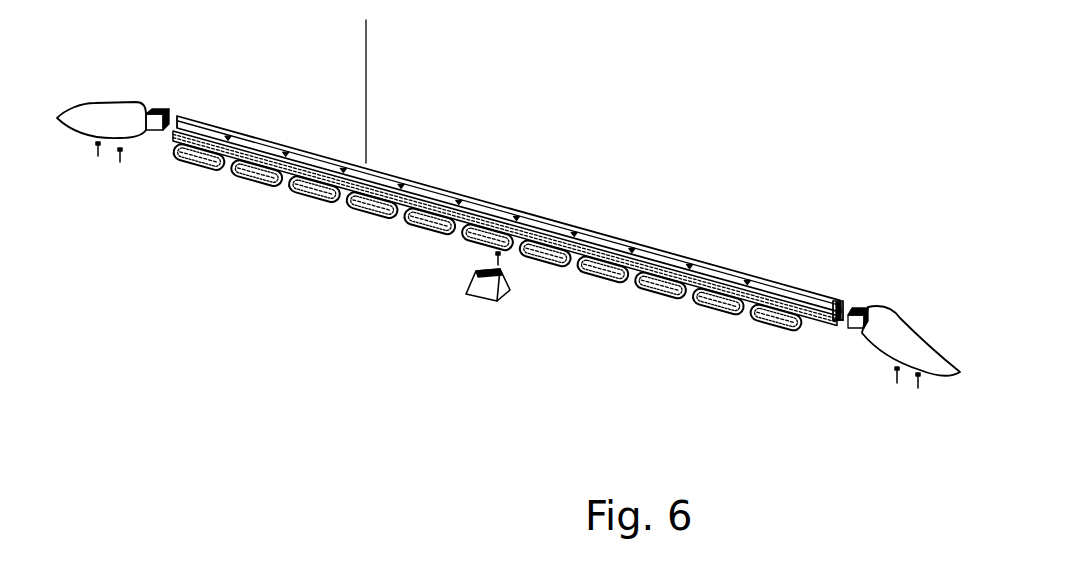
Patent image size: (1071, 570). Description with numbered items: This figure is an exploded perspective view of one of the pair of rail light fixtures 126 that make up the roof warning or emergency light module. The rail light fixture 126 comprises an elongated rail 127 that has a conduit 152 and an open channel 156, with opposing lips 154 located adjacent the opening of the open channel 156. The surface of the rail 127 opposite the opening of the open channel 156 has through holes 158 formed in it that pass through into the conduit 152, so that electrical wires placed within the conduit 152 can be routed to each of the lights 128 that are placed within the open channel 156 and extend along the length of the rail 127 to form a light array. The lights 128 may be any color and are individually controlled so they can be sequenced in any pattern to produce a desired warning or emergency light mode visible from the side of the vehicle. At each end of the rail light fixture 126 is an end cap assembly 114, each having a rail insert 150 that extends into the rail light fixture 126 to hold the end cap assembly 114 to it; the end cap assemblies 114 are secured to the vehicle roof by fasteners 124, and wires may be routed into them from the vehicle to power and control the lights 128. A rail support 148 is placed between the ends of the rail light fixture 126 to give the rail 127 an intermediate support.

The end cap assembly 114 is at (116, 98).
The fasteners 124 is at (122, 160).
The rail light fixture 126 is at (598, 199).
The rail 127 is at (222, 117).
The lights 128 is at (358, 208).
The rail support 148 is at (483, 300).
The rail insert 150 is at (167, 113).
The conduit 152 is at (845, 303).
The opposing lips 154 is at (831, 300).
The open channel 156 is at (837, 316).
The through holes 158 is at (333, 172).